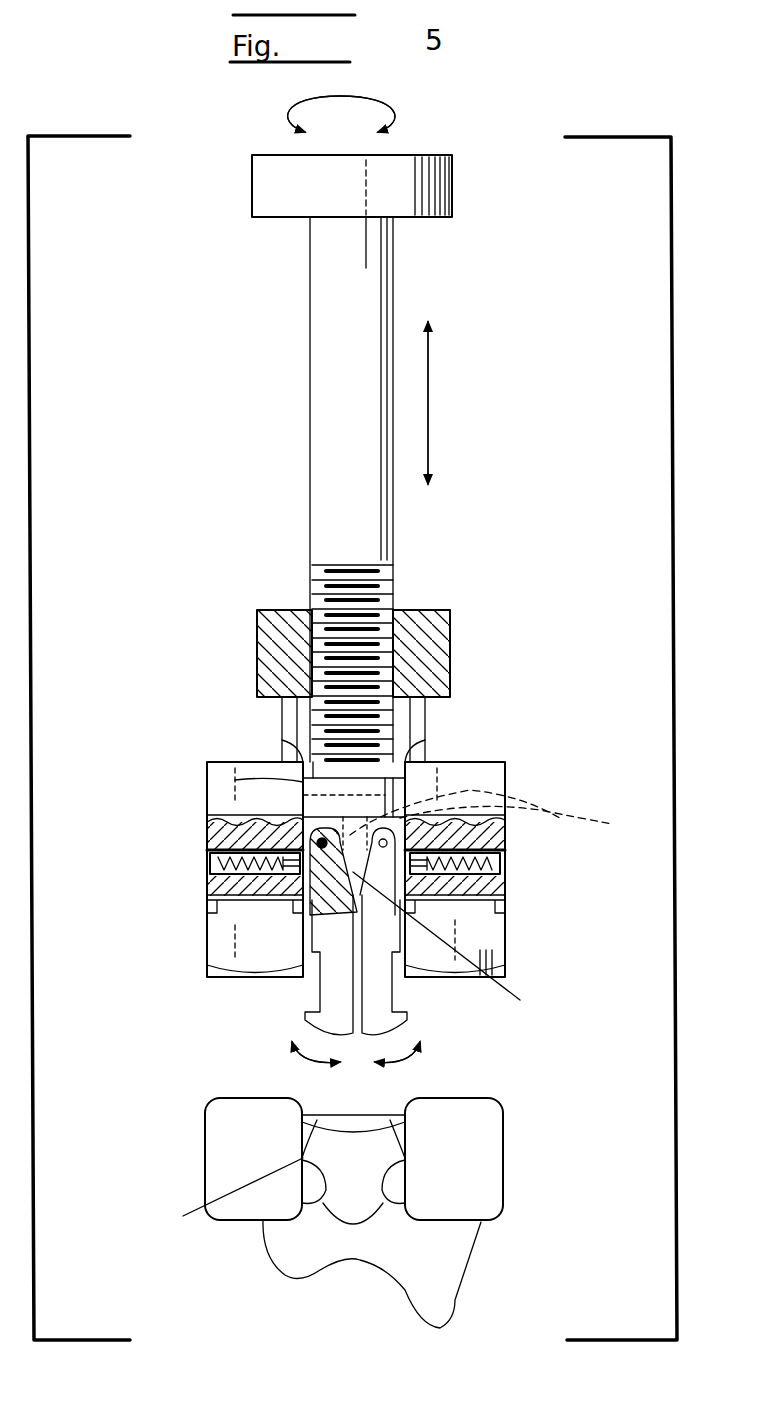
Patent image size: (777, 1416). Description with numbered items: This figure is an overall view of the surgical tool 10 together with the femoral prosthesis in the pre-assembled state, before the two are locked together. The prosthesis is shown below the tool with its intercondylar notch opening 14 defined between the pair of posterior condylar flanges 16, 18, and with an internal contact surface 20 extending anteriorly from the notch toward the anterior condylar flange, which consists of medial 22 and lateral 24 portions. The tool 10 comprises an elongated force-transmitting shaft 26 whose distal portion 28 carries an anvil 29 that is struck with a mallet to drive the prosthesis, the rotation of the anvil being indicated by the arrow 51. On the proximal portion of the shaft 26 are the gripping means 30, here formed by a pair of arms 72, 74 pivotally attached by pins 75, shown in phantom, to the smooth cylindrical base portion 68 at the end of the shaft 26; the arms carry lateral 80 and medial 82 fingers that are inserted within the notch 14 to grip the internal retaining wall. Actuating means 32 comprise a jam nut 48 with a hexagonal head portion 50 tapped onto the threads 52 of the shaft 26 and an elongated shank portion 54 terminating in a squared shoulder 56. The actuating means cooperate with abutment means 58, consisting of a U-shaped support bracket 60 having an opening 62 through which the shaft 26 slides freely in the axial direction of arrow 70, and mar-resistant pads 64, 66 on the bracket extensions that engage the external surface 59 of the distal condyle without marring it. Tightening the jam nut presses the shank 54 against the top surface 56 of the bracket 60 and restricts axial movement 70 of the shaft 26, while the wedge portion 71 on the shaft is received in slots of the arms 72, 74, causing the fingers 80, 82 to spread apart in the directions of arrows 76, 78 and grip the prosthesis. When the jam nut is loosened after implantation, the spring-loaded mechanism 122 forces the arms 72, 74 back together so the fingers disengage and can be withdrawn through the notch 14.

The surgical tool 10 is at (524, 262).
The intercondylar notch opening 14 is at (350, 1158).
The posterior condylar flange 16 is at (225, 1162).
The posterior condylar flange 18 is at (492, 1153).
The internal contact surface 20 is at (221, 1194).
The medial portion 22 is at (290, 1258).
The lateral portion 24 is at (440, 1282).
The force-transmitting shaft 26 is at (318, 400).
The distal portion 28 is at (338, 226).
The anvil 29 is at (266, 192).
The gripping means 30 is at (286, 1008).
The actuating means 32 is at (270, 733).
The jam nut 48 is at (425, 715).
The hexagonal head portion 50 is at (440, 665).
The rotation arrow 51 is at (400, 115).
The threads 52 is at (383, 577).
The elongated shank portion 54 is at (422, 720).
The squared shoulder 56 is at (292, 760).
The abutment means 58 is at (532, 928).
The external surface 59 is at (233, 1098).
The U-shaped support bracket 60 is at (496, 782).
The opening 62 is at (300, 797).
The mar-resistant pad 64 is at (216, 938).
The mar-resistant pad 66 is at (486, 950).
The smooth cylindrical portion 68 is at (300, 790).
The arrow 70 is at (430, 398).
The wedge portion 71 is at (525, 822).
The arm 72 is at (330, 978).
The arm 74 is at (378, 982).
The pins 75 is at (305, 836).
The arrow 76 is at (308, 1064).
The arrow 78 is at (408, 1066).
The lateral finger 80 is at (306, 1012).
The medial finger 82 is at (398, 1012).
The spring-loaded mechanism 122 is at (212, 868).